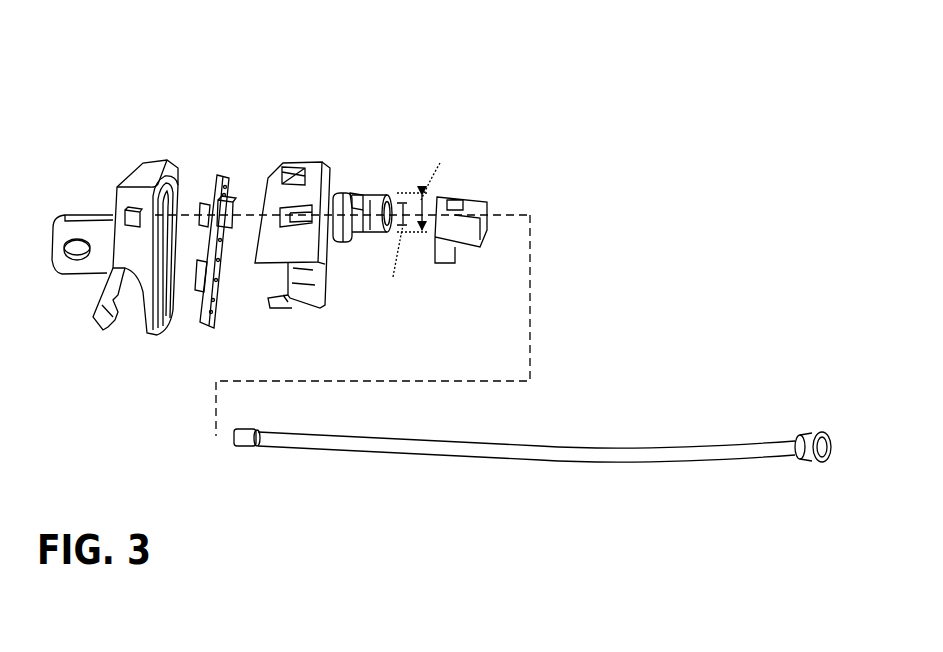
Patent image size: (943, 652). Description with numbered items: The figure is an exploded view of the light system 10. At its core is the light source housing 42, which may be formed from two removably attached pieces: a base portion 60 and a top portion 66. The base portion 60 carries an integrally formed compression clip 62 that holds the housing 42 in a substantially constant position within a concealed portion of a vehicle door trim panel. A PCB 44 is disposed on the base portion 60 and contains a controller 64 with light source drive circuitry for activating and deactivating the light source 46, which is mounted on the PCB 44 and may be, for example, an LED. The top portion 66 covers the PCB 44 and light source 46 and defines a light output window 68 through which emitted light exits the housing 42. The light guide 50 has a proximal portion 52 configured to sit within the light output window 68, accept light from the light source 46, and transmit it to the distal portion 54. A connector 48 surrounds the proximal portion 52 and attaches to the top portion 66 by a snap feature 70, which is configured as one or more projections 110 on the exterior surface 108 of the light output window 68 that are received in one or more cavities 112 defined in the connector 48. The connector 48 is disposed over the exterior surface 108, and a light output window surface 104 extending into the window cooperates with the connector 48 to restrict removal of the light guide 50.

The light system 10 is at (591, 167).
The light source housing 42 is at (165, 155).
The PCB 44 is at (217, 173).
The light source 46 is at (240, 183).
The connector 48 is at (447, 202).
The light guide 50 is at (492, 448).
The proximal portion 52 is at (232, 444).
The distal portion 54 is at (810, 463).
The base portion 60 is at (140, 178).
The compression clip 62 is at (110, 325).
The controller 64 is at (187, 288).
The top portion 66 is at (320, 183).
The light output window 68 is at (388, 198).
The snap feature 70 is at (357, 193).
The light output window surface 104 is at (365, 230).
The exterior surface 108 is at (369, 218).
The projections 110 is at (366, 182).
The cavities 112 is at (550, 153).